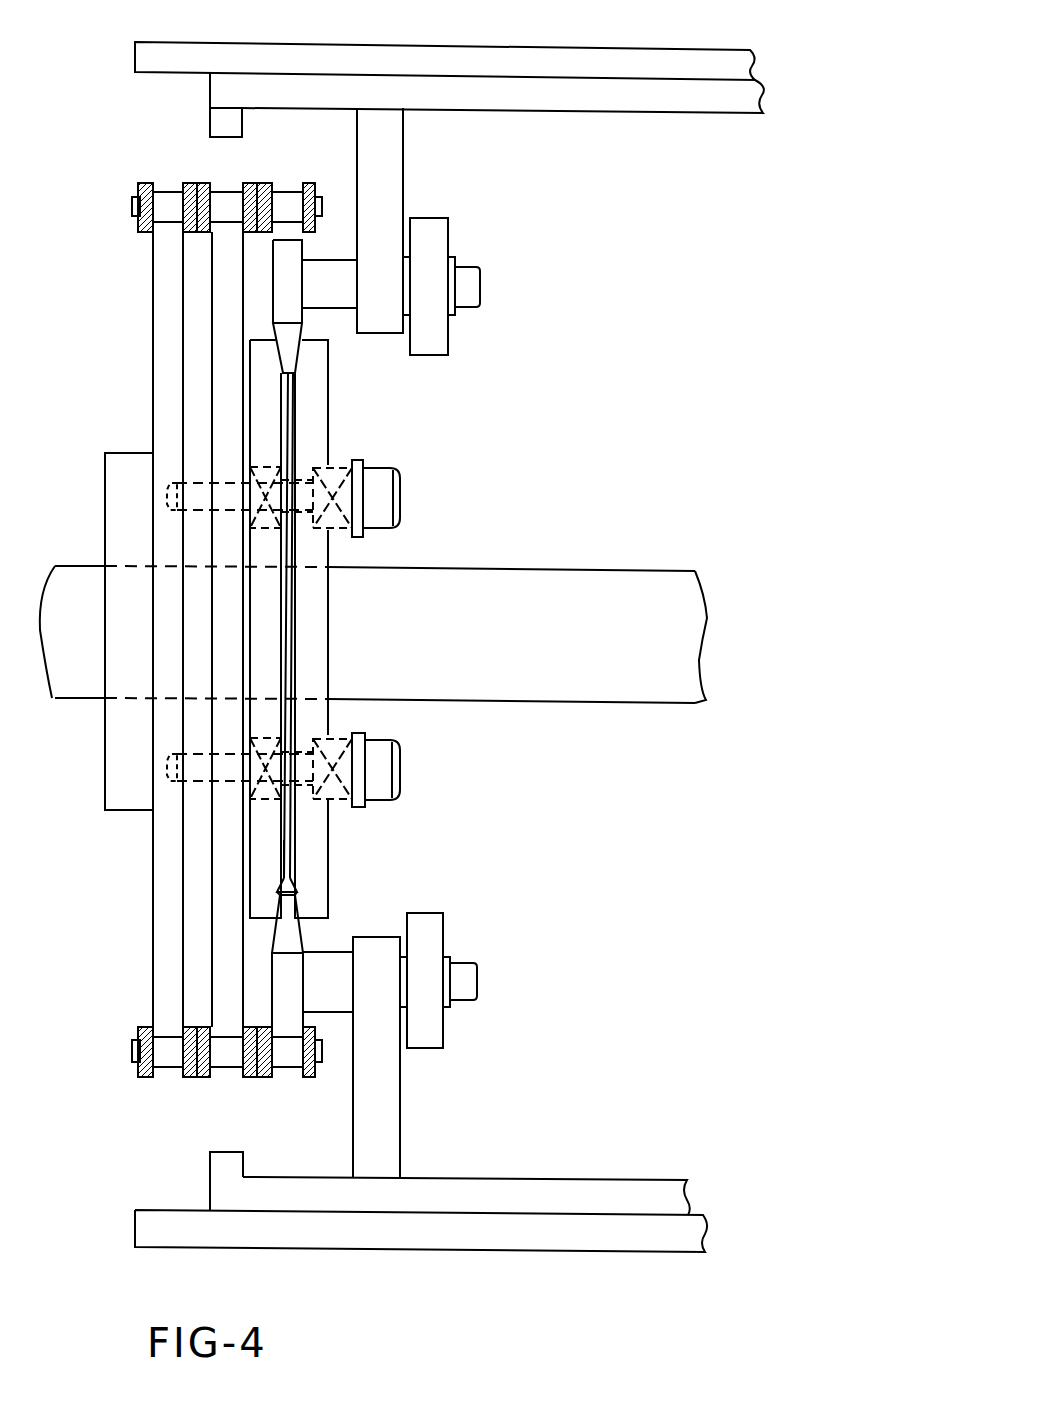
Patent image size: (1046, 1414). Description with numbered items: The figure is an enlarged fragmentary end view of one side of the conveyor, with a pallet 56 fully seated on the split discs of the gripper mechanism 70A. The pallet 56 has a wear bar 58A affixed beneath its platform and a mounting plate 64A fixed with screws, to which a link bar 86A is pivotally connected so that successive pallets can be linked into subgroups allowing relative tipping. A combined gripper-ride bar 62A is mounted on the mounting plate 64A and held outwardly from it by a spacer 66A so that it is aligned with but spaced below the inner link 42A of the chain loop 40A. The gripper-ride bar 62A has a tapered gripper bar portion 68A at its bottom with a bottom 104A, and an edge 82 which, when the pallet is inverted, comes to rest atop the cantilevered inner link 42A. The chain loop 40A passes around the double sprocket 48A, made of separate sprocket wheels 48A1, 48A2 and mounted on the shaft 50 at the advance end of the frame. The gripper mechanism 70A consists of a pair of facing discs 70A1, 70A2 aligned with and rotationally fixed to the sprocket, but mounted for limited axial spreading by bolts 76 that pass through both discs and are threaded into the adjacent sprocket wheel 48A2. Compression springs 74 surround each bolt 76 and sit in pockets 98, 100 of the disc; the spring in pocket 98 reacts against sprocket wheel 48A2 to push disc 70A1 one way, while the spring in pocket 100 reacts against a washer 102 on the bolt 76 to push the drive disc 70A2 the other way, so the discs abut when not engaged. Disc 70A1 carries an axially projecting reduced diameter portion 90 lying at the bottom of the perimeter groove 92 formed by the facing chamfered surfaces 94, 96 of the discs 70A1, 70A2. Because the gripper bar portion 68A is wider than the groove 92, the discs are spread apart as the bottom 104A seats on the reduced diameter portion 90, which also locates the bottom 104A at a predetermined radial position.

The pallet 56 is at (457, 40).
The wear bar 58A is at (208, 124).
The mounting plate 64A is at (406, 161).
The link bar 86A is at (444, 342).
The spacer 66A is at (335, 256).
The gripper-ride bar 62A is at (284, 280).
The edge of gripper-ride bar 82 is at (286, 233).
The gripper bar portion 68A is at (284, 337).
The bottom of gripper bar portion 104A is at (286, 378).
The split disc gripper mechanism 70A is at (360, 432).
The disc 70A1 is at (258, 880).
The disc 70A2 is at (324, 880).
The double sprocket 48A is at (98, 433).
The sprocket wheel 48A1 is at (160, 973).
The sprocket wheel 48A2 is at (223, 986).
The chain loop 40A is at (134, 184).
The inner link 42A is at (282, 190).
The shaft 50 is at (647, 539).
The pocket 98 is at (250, 523).
The compression spring 74 is at (260, 466).
The washer 102 is at (366, 458).
The bolt 76 is at (399, 468).
The pocket 100 is at (336, 456).
The reduced diameter portion 90 is at (287, 859).
The perimeter groove 92 is at (291, 889).
The chamfered surface 94 is at (283, 897).
The chamfered surface 96 is at (294, 902).